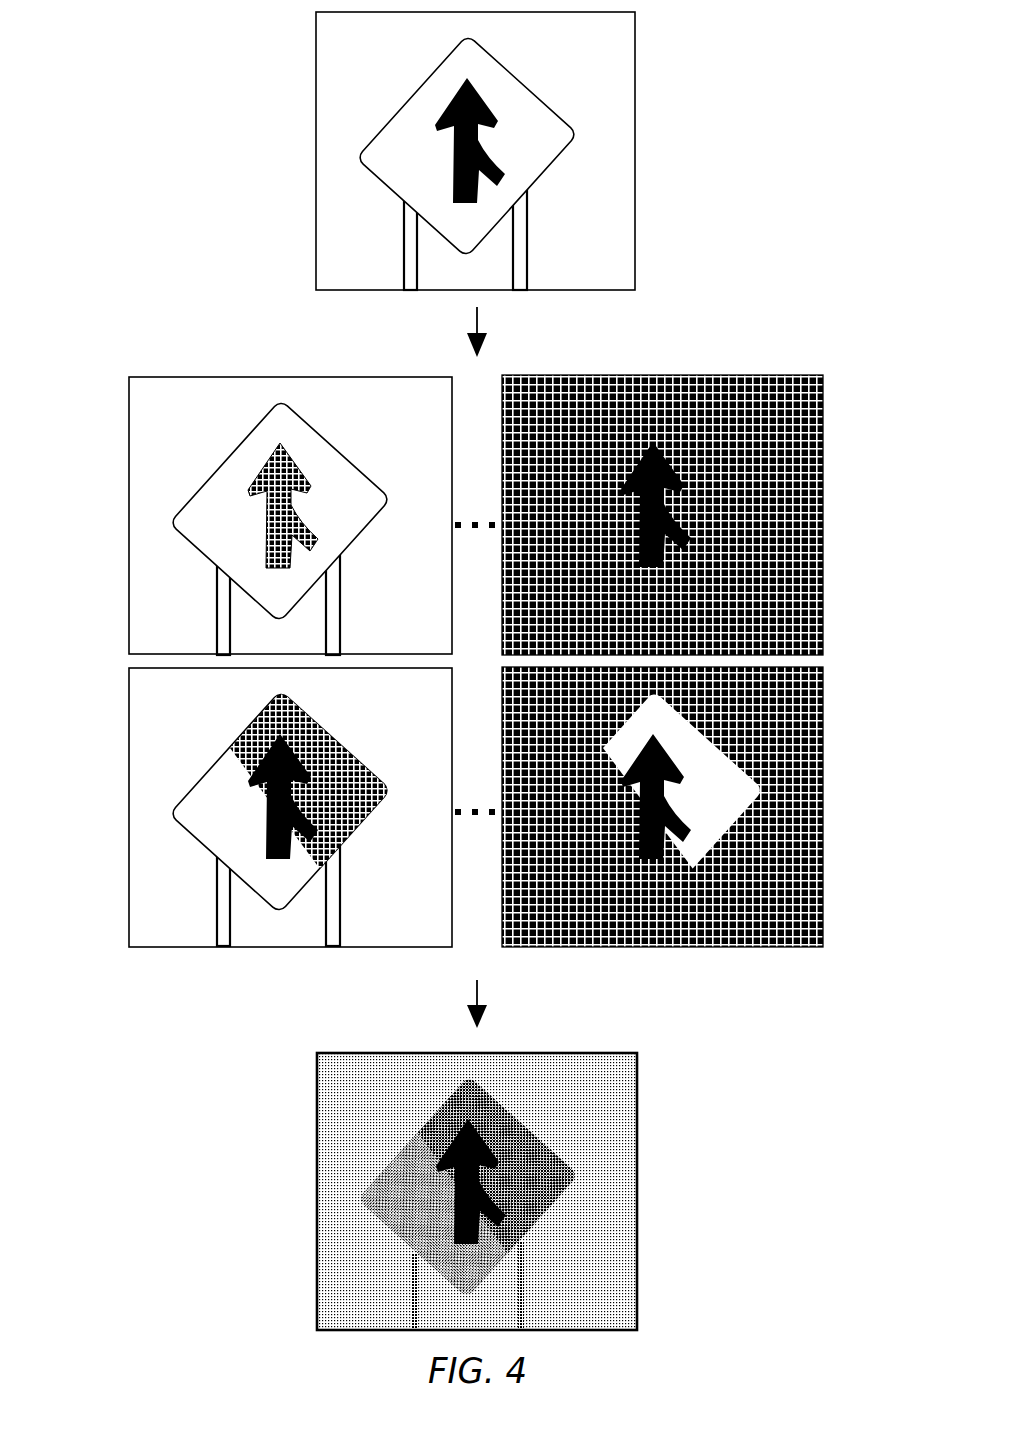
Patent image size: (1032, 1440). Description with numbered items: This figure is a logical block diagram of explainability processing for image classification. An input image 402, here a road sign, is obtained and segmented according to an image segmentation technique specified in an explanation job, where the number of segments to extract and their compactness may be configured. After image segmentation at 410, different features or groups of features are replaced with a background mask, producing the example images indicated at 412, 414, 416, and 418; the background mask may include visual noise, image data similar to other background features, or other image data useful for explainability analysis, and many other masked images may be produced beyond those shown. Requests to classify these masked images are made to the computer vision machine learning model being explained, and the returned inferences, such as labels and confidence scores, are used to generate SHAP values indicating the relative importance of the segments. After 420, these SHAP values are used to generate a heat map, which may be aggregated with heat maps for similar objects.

The input image 402 is at (316, 86).
The image segmentation 410 is at (476, 326).
The background mask 412 is at (254, 488).
The background mask 414 is at (803, 552).
The background mask 416 is at (246, 738).
The background mask 418 is at (808, 872).
The heat map generation 420 is at (476, 998).